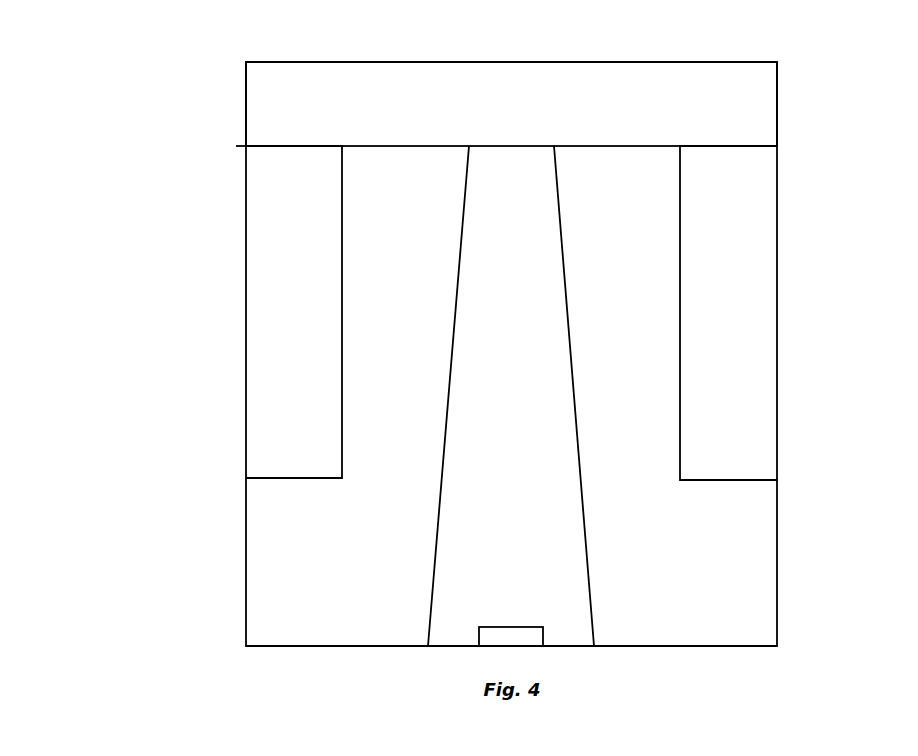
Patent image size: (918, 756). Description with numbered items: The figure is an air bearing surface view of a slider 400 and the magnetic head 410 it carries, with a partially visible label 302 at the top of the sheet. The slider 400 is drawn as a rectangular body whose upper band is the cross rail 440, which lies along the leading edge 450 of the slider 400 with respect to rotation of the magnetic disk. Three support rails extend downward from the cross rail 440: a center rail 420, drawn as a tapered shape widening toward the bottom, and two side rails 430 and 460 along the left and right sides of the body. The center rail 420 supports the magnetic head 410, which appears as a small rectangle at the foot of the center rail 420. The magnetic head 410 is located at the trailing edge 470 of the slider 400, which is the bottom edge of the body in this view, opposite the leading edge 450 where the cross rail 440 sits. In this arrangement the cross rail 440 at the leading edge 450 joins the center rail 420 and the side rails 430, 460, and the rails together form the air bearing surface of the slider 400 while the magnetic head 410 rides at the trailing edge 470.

The substrate (partial label) 302 is at (767, 4).
The slider 400 is at (103, 598).
The magnetic head 410 is at (500, 635).
The center rail 420 is at (479, 469).
The side rail 430 is at (288, 282).
The cross rail 440 is at (288, 95).
The leading edge 450 is at (322, 62).
The side rail 460 is at (755, 304).
The trailing edge 470 is at (680, 646).